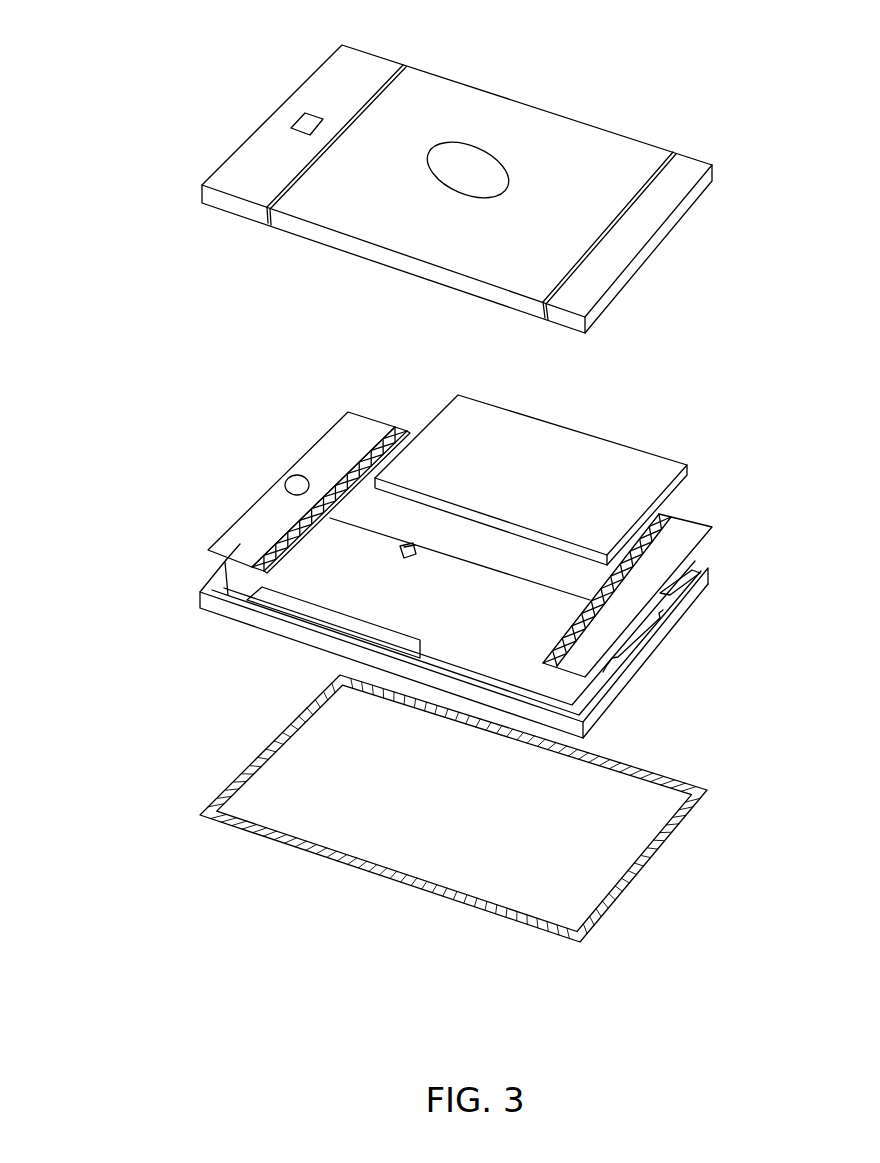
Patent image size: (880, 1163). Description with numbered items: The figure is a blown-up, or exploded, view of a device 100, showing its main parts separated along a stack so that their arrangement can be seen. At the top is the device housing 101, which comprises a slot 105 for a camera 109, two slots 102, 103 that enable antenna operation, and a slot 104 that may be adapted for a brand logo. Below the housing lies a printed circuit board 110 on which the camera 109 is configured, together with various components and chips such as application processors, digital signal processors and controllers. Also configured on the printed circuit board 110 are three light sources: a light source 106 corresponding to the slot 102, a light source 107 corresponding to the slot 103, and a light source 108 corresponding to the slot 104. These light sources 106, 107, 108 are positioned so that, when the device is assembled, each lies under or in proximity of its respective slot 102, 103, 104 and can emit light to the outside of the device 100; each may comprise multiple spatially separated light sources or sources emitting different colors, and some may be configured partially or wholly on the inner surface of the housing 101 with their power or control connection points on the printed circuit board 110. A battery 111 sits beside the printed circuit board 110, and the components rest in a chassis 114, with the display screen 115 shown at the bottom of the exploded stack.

The device 100 is at (123, 127).
The device housing 101 is at (495, 85).
The slot 102 is at (405, 63).
The slot 103 is at (673, 152).
The slot 104 is at (437, 147).
The slot 105 is at (302, 121).
The light source 106 is at (396, 428).
The light source 107 is at (672, 517).
The light source 108 is at (400, 548).
The camera 109 is at (284, 484).
The printed circuit board 110 is at (306, 455).
The battery 111 is at (665, 461).
The chassis 114 is at (707, 587).
The display screen 115 is at (673, 782).